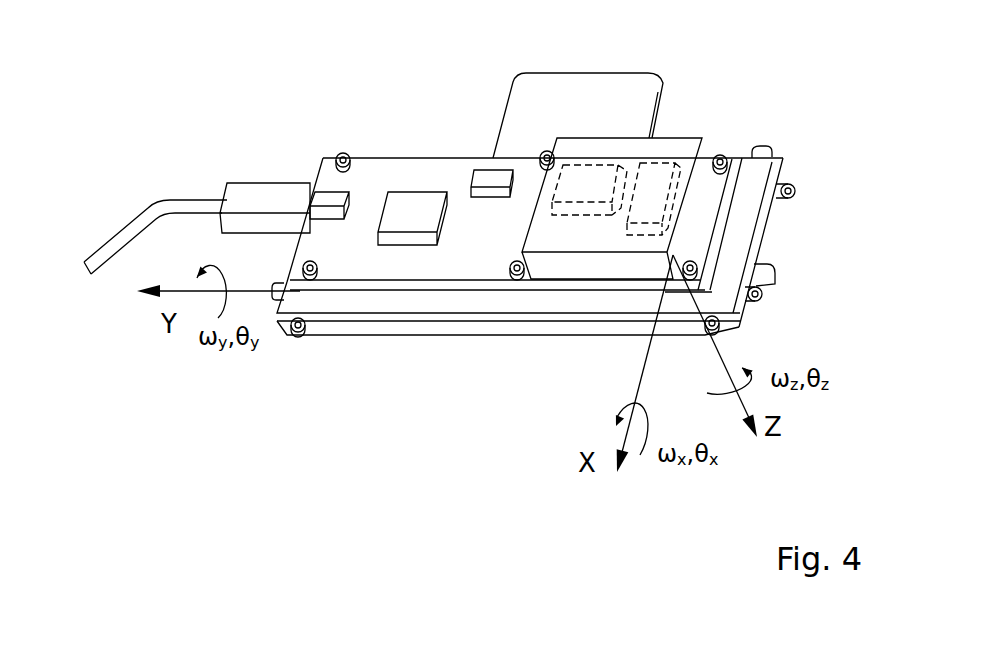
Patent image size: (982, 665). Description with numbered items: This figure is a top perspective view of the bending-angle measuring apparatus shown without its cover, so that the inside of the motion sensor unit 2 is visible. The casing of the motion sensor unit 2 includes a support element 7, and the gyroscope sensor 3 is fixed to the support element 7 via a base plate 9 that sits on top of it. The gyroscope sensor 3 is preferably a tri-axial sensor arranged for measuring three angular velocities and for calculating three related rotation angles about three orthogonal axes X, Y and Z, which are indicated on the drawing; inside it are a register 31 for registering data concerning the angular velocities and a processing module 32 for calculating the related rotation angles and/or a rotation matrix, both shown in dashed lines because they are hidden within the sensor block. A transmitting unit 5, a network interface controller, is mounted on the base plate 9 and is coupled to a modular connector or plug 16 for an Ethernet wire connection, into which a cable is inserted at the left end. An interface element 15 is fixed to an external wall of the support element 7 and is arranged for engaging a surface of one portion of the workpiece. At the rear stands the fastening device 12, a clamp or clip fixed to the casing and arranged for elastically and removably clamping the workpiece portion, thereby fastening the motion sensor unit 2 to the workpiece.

The motion sensor unit 2 is at (258, 383).
The gyroscope sensor 3 is at (578, 237).
The transmitting unit 5 is at (408, 203).
The support element 7 is at (375, 302).
The base plate 9 is at (440, 178).
The fastening device 12 is at (614, 92).
The interface element 15 is at (443, 328).
The modular connector or plug 16 is at (328, 200).
The register 31 is at (653, 182).
The processing module 32 is at (597, 175).